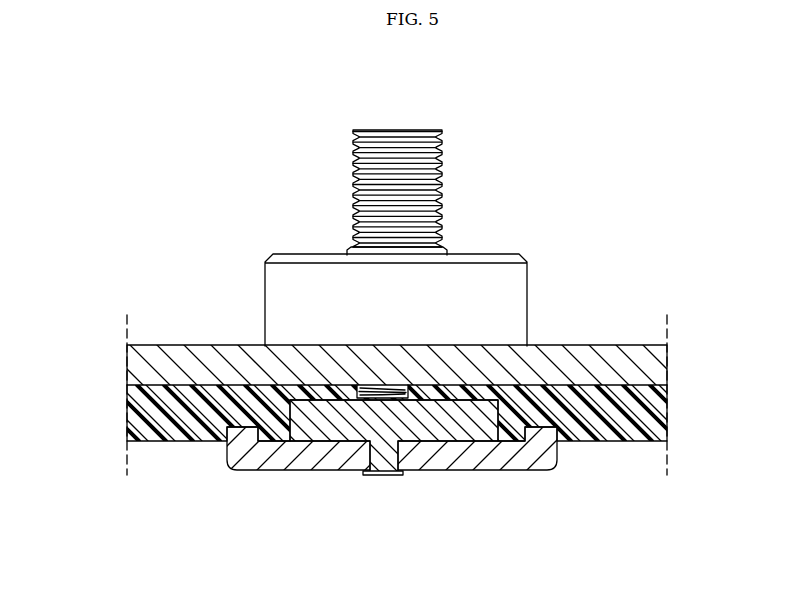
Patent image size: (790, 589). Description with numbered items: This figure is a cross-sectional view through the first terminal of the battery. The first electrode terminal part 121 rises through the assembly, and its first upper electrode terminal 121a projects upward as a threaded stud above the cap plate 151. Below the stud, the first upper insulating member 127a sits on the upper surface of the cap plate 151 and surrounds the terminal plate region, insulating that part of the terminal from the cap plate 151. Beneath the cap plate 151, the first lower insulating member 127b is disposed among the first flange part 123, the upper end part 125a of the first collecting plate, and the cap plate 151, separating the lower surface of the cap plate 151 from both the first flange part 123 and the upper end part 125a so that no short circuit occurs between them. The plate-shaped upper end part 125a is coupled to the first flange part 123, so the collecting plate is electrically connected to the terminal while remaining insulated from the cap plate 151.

The first electrode terminal part 121 is at (328, 235).
The first upper electrode terminal 121a is at (392, 129).
The first upper insulating member 127a is at (513, 293).
The cap plate 151 is at (140, 366).
The first lower insulating member 127b is at (137, 415).
The first flange part 123 is at (335, 424).
The upper end part 125a is at (475, 453).